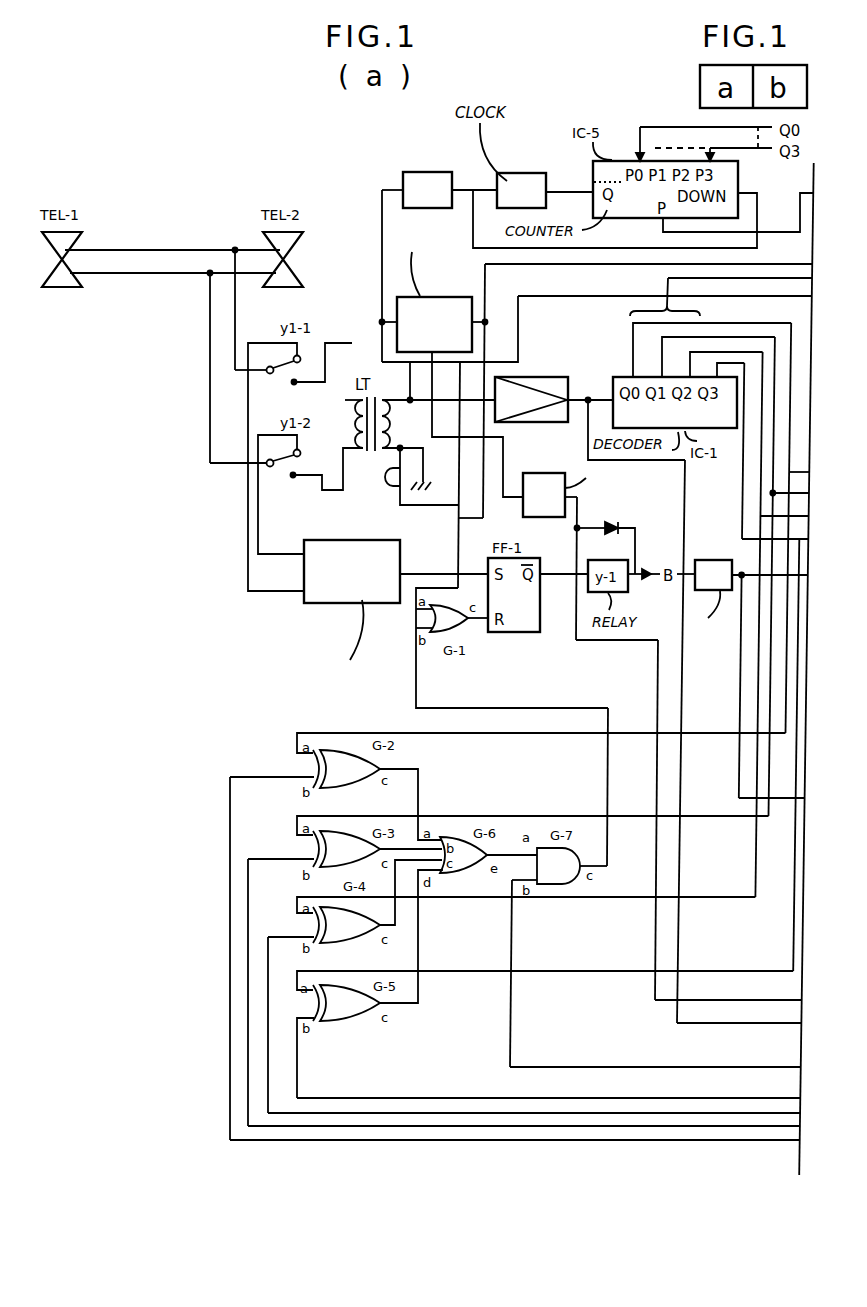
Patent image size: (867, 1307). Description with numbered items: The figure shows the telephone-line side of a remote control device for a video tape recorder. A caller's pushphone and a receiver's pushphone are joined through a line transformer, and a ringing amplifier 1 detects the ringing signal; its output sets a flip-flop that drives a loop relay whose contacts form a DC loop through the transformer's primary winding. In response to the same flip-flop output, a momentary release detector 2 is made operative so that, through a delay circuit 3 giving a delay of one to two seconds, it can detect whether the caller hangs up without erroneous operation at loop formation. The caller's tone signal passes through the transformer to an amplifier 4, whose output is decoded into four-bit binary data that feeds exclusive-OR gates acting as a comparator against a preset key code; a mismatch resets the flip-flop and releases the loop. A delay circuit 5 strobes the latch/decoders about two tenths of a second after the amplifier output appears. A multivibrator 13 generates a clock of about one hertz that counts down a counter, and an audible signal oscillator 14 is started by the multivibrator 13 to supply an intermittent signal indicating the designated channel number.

The ringing amplifier 1 is at (326, 604).
The momentary release detector 2 is at (441, 297).
The delay circuit 3 is at (549, 473).
The amplifier 4 is at (549, 377).
The delay circuit 5 is at (708, 560).
The multivibrator 13 is at (516, 173).
The audible signal oscillator 14 is at (432, 172).